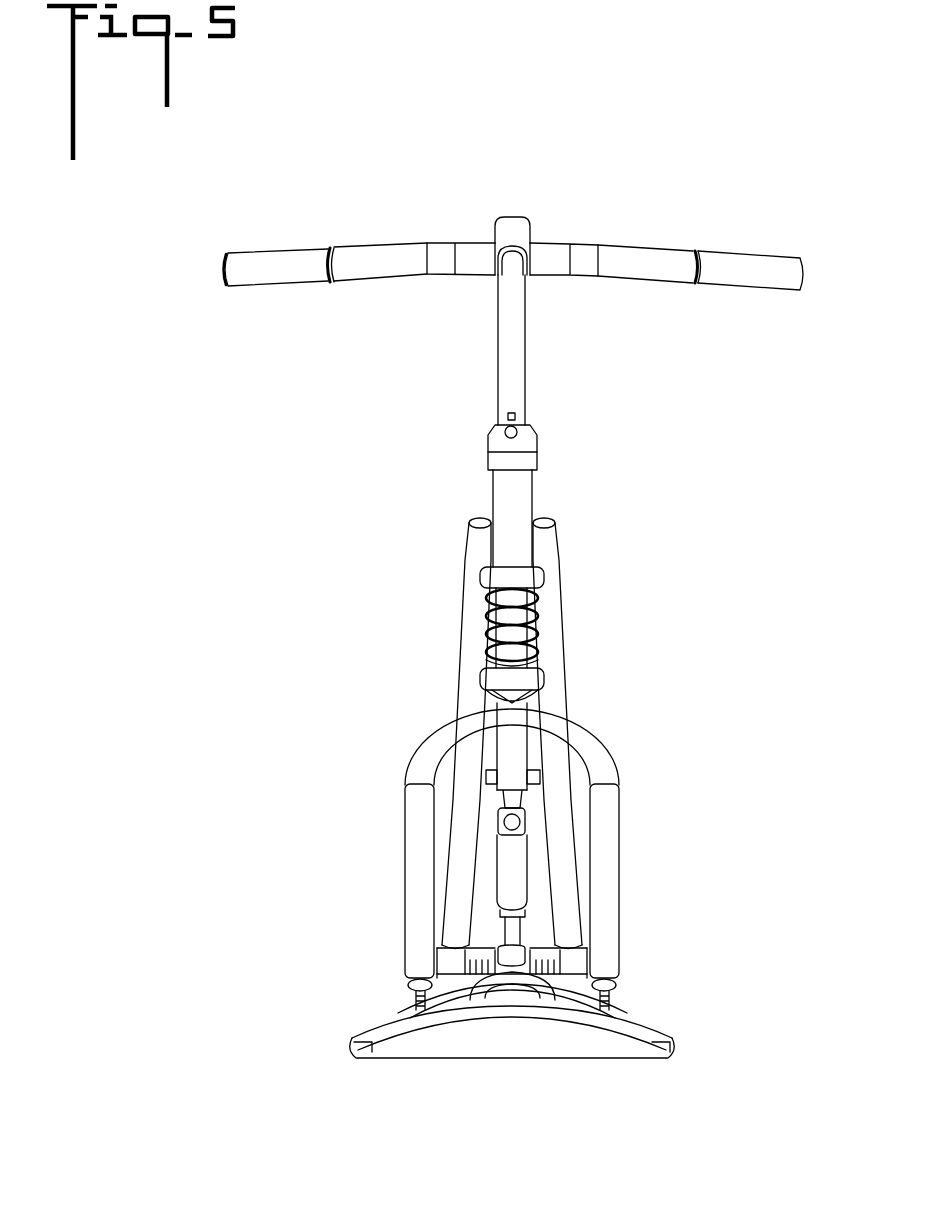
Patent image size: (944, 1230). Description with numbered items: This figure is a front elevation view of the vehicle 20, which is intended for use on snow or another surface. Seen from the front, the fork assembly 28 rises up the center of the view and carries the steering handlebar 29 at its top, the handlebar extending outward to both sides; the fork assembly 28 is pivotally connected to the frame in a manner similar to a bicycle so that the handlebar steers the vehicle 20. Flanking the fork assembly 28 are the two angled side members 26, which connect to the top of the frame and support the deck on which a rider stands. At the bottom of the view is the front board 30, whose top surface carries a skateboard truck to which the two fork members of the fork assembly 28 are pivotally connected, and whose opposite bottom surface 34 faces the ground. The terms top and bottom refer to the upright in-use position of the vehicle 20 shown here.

The vehicle 20 is at (781, 184).
The steering handlebar 29 is at (556, 257).
The angled side members 26 is at (478, 568).
The fork assembly 28 is at (434, 705).
The front board 30 is at (366, 1010).
The bottom surface 34 is at (532, 1052).